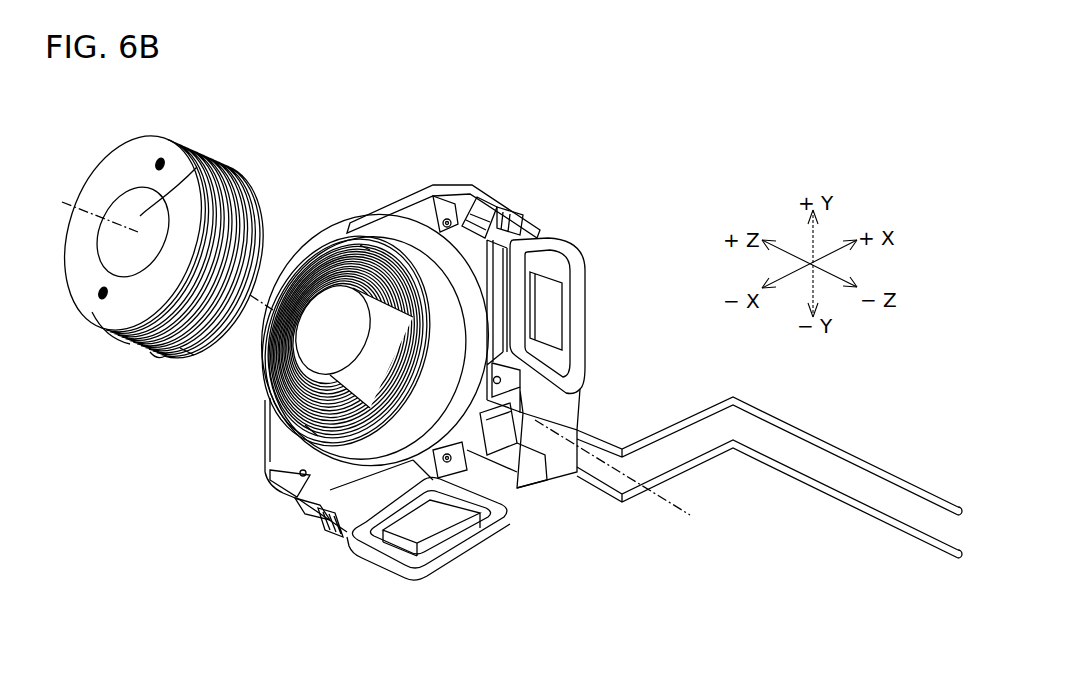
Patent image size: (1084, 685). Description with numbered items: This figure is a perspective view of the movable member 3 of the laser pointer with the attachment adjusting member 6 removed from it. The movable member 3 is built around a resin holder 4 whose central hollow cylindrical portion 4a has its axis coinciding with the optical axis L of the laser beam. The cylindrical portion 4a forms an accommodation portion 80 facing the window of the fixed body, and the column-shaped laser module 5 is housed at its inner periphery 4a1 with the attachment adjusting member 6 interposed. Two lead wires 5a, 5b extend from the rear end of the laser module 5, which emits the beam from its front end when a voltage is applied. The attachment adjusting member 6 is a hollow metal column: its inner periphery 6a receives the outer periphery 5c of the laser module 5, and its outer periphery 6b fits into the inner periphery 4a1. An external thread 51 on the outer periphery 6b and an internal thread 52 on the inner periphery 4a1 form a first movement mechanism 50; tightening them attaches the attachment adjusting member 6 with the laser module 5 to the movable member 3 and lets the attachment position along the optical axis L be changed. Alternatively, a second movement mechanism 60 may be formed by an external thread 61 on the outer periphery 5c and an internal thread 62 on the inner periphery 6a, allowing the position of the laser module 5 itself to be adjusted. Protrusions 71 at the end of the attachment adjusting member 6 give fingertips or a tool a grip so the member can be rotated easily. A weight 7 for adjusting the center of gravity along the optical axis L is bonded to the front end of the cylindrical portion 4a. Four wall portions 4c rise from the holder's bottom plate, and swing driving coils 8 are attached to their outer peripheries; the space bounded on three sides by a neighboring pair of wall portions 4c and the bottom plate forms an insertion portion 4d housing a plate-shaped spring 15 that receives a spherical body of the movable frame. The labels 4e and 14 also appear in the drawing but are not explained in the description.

The movable member 3 is at (246, 102).
The holder 4 is at (438, 391).
The cylindrical portion 4a is at (374, 243).
The inner periphery of the cylindrical portion 4a1 is at (308, 272).
The wall portions 4c is at (410, 207).
The insertion portions 4d is at (540, 428).
The bottom attachment portion 4e is at (455, 563).
The laser module 5 is at (300, 330).
The lead wire 5a is at (712, 452).
The lead wire 5b is at (728, 397).
The outer periphery of the laser module 5c is at (276, 356).
The attachment adjusting member 6 is at (133, 167).
The inner periphery of the attachment adjusting member 6a is at (125, 335).
The outer periphery of the attachment adjusting member 6b is at (160, 357).
The weight 7 is at (335, 240).
The swing driving coils 8 is at (448, 190).
The clip 14 is at (495, 205).
The plate-shaped springs 15 is at (525, 480).
The first movement mechanism 50 is at (197, 528).
The external thread 51 is at (187, 352).
The internal thread 52 is at (312, 430).
The second movement mechanism 60 is at (376, 92).
The external thread 61 is at (364, 245).
The internal thread 62 is at (147, 216).
The protrusions 71 is at (158, 159).
The accommodation portion 80 is at (357, 433).
The optical axis L is at (195, 253).